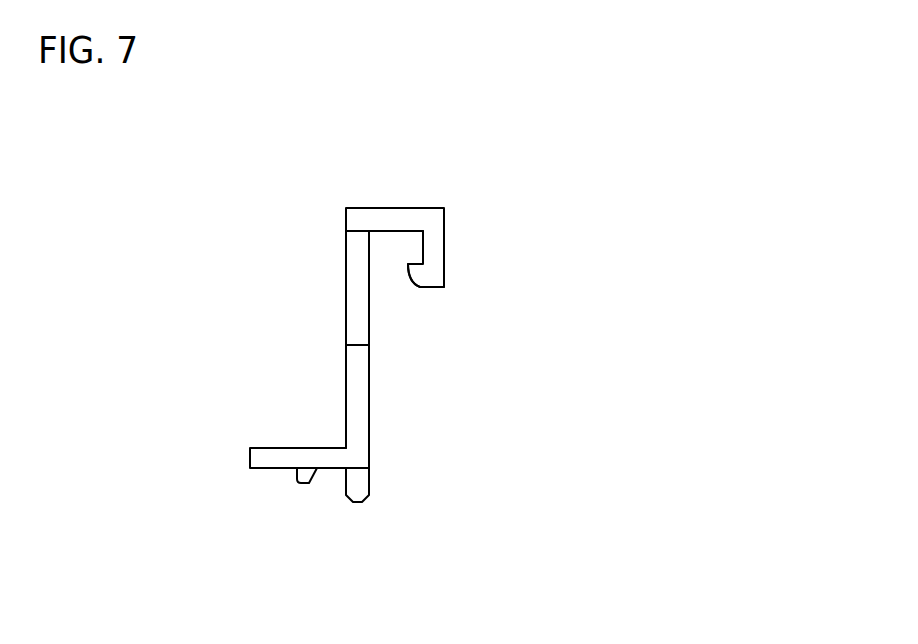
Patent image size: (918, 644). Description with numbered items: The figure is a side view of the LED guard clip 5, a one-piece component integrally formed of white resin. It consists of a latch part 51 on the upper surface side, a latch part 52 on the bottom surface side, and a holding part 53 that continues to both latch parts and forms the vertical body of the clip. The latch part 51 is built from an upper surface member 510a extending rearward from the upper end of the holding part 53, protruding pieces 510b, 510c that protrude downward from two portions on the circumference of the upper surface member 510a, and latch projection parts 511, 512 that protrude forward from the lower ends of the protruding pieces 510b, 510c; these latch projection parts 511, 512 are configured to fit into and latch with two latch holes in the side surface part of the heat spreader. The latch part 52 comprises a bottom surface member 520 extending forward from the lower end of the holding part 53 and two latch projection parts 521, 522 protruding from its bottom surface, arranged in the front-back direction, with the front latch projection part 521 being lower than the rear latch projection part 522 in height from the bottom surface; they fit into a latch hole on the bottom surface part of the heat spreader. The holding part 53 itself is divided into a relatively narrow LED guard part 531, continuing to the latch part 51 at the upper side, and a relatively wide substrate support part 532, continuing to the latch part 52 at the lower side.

The LED guard clip 5 is at (690, 174).
The latch part 51 is at (320, 187).
The latch part 52 is at (242, 502).
The holding part 53 is at (173, 290).
The upper surface member 510a is at (402, 214).
The protruding piece 510b is at (544, 255).
The protruding piece 510c is at (438, 253).
The latch projection part 511 is at (514, 287).
The latch projection part 512 is at (420, 289).
The bottom surface member 520 is at (277, 448).
The latch projection part 521 is at (303, 483).
The latch projection part 522 is at (358, 492).
The LED guard part 531 is at (355, 283).
The substrate support part 532 is at (352, 389).